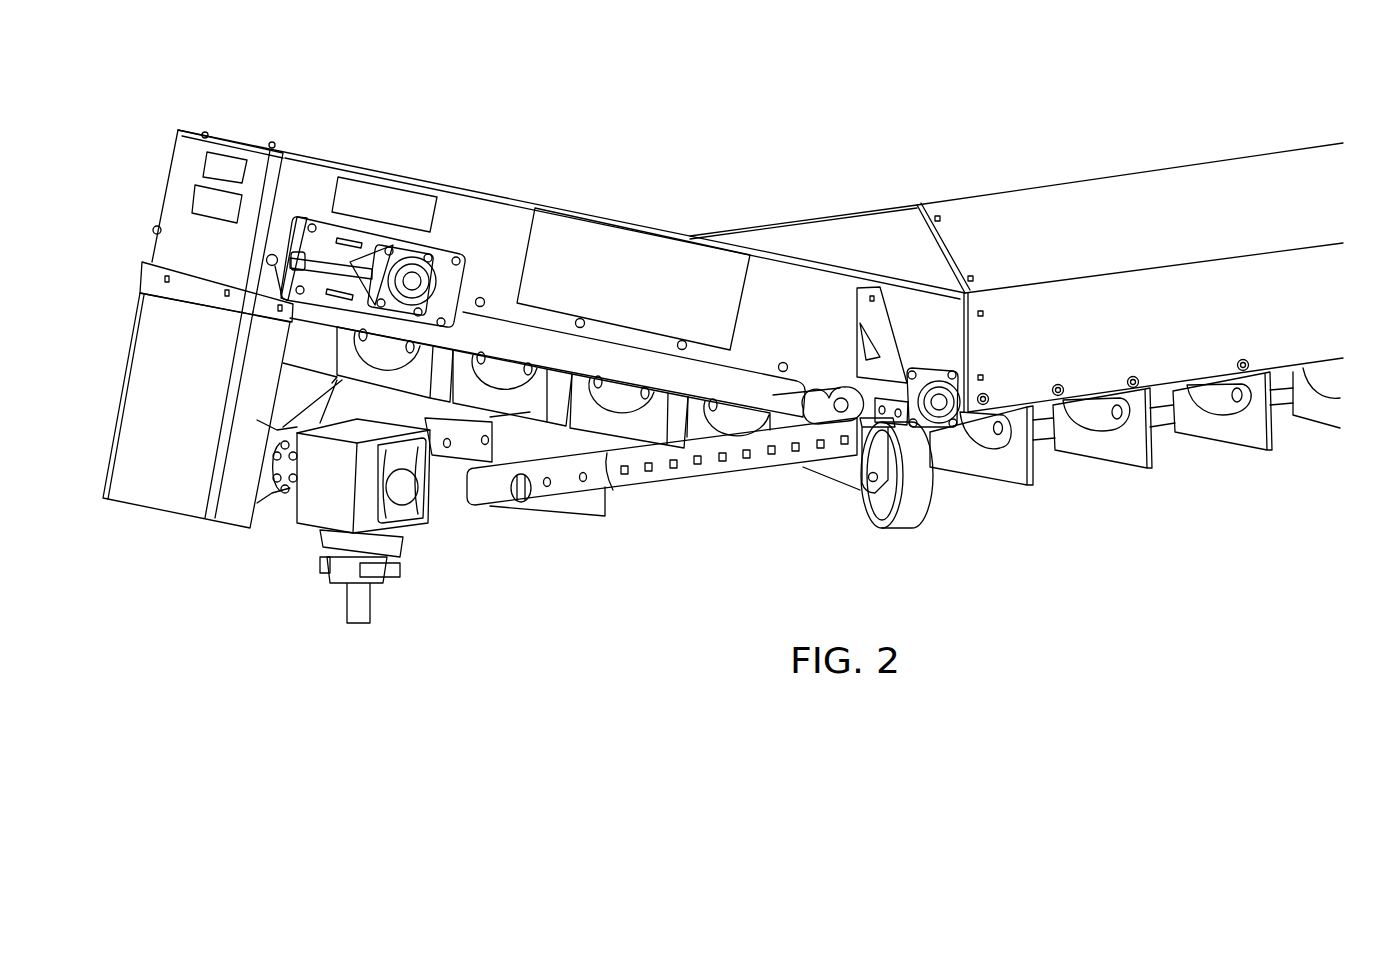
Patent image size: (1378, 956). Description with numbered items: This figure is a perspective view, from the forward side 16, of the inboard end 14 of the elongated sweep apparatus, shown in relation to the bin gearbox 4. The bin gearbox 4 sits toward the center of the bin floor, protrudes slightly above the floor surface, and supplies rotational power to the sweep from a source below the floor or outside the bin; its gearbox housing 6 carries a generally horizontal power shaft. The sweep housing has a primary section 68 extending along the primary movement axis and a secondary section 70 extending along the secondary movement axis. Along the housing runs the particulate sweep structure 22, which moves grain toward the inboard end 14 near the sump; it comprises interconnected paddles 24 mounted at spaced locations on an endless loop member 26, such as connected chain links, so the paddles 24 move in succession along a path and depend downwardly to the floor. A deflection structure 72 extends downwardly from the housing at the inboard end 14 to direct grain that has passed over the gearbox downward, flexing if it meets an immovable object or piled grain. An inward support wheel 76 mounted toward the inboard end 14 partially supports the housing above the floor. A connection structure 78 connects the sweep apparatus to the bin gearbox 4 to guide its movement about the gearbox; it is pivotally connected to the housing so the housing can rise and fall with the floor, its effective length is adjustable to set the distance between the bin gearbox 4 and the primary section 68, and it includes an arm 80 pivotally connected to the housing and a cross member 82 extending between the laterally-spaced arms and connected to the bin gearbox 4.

The inboard end 14 is at (205, 117).
The secondary section 70 is at (473, 227).
The forward side 16 is at (1070, 323).
The primary section 68 is at (1123, 205).
The deflection structure 72 is at (158, 487).
The bin gearbox 4 is at (315, 510).
The gearbox housing 6 is at (420, 517).
The cross member 82 is at (450, 483).
The arm 80 is at (662, 475).
The connection structure 78 is at (640, 550).
The inward support wheel 76 is at (910, 513).
The endless loop member 26 is at (1047, 408).
The particulate sweep structure 22 is at (1093, 487).
The paddles 24 is at (1207, 423).